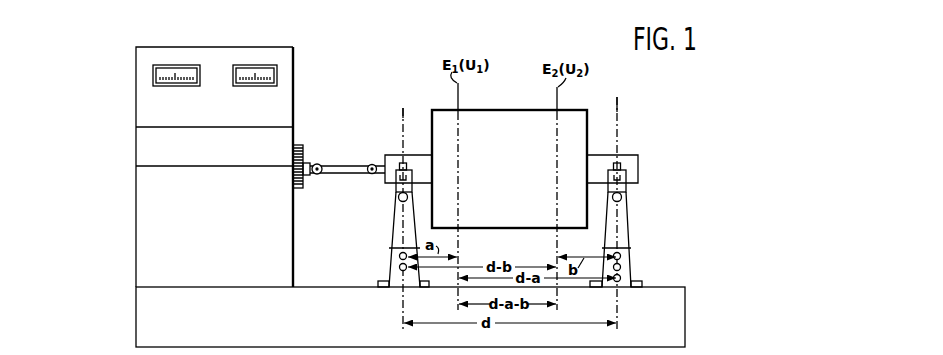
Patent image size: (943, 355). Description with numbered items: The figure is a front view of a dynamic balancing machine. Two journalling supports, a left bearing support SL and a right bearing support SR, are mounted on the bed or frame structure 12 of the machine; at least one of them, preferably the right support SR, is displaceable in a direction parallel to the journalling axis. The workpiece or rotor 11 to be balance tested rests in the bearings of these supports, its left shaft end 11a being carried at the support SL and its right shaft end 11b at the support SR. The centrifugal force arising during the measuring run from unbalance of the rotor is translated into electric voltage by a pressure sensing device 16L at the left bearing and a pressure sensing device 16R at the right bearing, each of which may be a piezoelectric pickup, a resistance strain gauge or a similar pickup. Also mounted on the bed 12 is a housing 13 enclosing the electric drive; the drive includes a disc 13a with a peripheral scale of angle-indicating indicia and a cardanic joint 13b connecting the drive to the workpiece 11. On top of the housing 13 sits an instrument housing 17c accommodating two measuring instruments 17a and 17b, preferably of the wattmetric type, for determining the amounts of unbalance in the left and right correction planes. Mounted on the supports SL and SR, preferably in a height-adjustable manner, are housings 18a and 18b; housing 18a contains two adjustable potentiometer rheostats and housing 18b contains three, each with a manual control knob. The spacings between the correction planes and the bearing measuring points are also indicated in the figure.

The workpiece or rotor 11 is at (495, 118).
The shaft end 11a is at (398, 155).
The shaft end 11b is at (638, 157).
The bed or frame structure 12 is at (145, 316).
The housing 13 is at (138, 252).
The disc 13a is at (300, 190).
The cardanic joint 13b is at (360, 165).
The pressure sensing device 16L is at (399, 198).
The pressure sensing device 16R is at (622, 197).
The measuring instrument 17a is at (273, 73).
The measuring instrument 17b is at (153, 77).
The instrument housing 17c is at (287, 110).
The housing 18a is at (398, 271).
The housing 18b is at (622, 267).
The left bearing support SL is at (397, 225).
The right bearing support SR is at (629, 226).